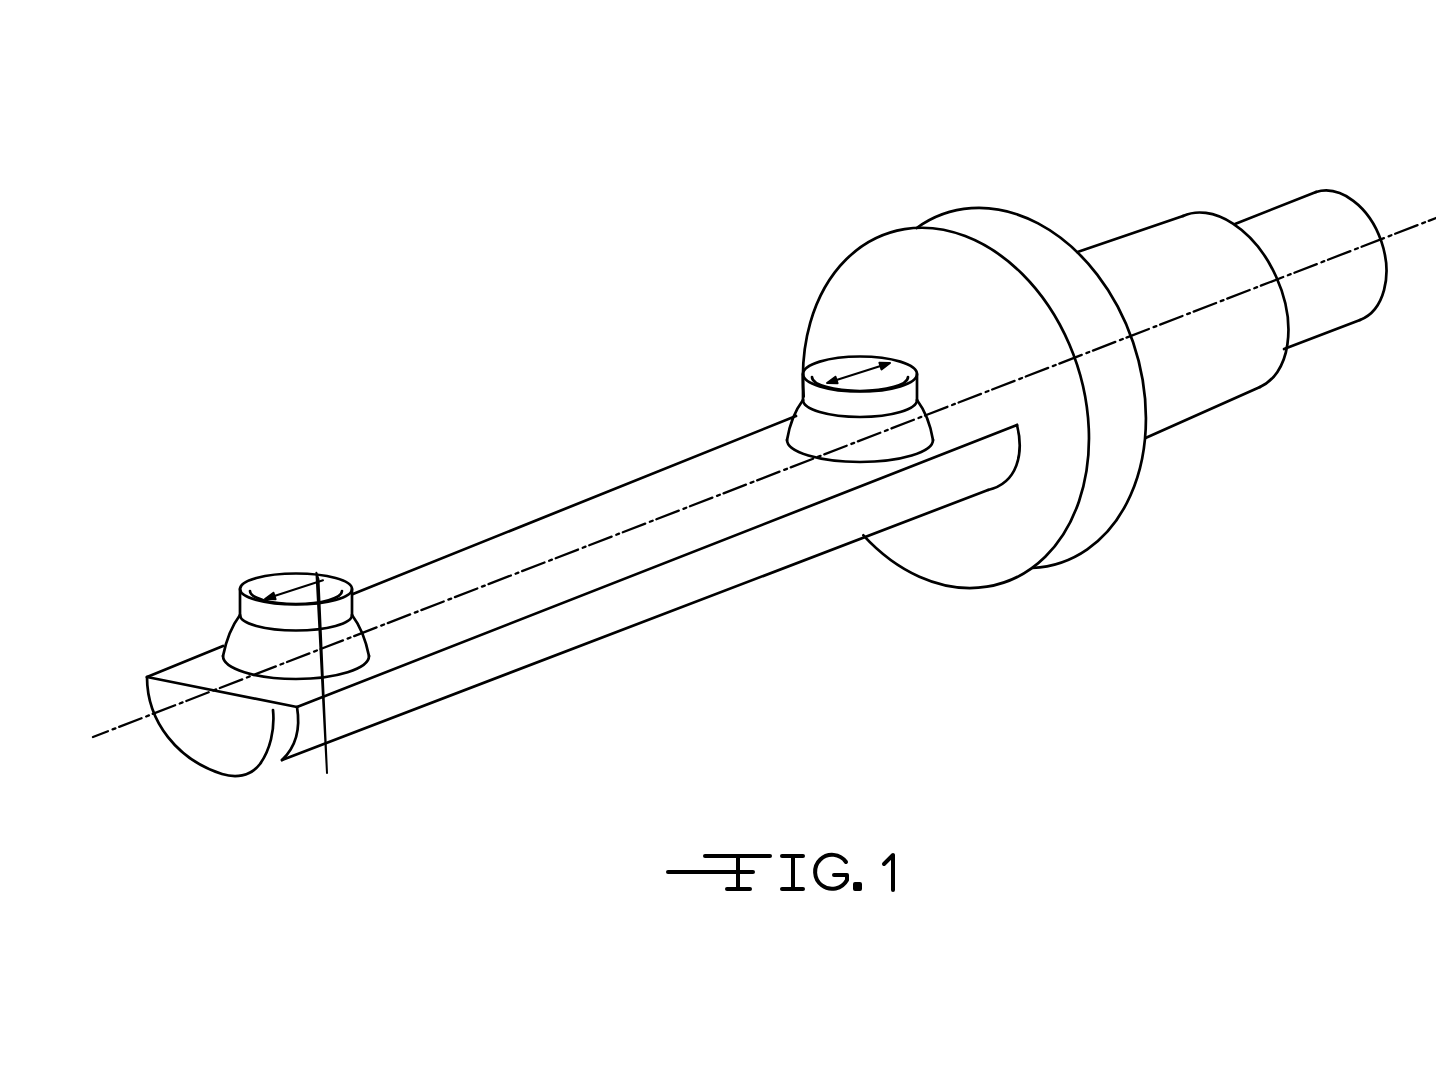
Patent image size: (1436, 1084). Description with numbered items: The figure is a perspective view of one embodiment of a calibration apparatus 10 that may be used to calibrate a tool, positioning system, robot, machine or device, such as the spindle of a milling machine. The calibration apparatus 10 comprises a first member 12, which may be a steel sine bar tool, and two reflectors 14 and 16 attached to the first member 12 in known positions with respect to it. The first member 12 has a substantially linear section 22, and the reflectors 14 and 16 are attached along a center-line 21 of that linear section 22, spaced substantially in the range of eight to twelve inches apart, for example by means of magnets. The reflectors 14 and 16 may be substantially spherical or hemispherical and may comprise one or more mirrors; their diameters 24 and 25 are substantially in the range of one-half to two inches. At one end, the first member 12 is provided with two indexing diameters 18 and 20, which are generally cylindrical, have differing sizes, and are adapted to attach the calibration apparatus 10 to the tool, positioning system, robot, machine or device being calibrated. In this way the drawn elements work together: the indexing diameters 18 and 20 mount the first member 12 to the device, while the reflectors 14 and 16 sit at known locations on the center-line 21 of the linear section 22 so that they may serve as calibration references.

The calibration apparatus 10 is at (1137, 140).
The first member 12 is at (583, 596).
The reflector 14 is at (279, 637).
The reflector 16 is at (835, 354).
The indexing diameter 18 is at (1300, 220).
The indexing diameter 20 is at (1190, 395).
The center-line 21 is at (119, 728).
The linear section 22 is at (590, 527).
The diameter 24 is at (296, 578).
The diameter 25 is at (860, 367).